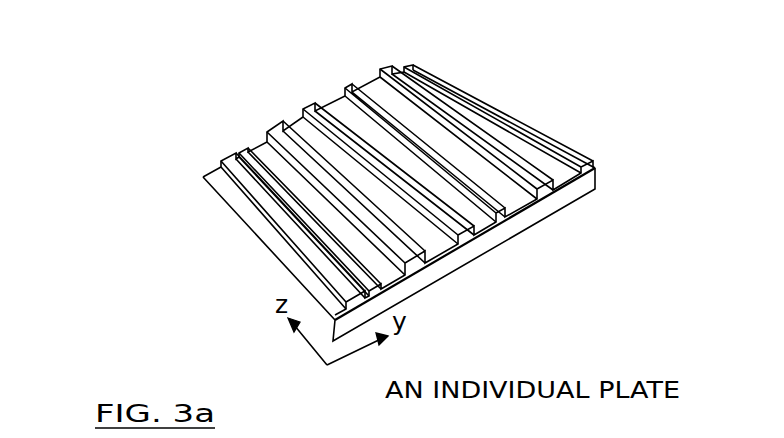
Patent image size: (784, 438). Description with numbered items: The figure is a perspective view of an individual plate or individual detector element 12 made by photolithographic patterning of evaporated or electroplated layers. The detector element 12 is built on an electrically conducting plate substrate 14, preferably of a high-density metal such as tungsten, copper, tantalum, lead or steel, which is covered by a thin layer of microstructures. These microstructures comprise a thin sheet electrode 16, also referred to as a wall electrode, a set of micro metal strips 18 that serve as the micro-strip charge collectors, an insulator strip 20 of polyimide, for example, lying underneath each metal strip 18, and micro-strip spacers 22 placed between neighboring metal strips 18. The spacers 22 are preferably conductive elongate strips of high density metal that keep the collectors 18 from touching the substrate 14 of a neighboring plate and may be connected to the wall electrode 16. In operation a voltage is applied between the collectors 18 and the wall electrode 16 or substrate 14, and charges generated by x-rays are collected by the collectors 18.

The individual detector element 12 is at (614, 173).
The electrically conducting plate substrate 14 is at (472, 255).
The thin sheet electrode 16 is at (180, 108).
The micro metal strips 18 is at (372, 163).
The insulator strip 20 is at (560, 191).
The micro-strip spacers 22 is at (453, 167).